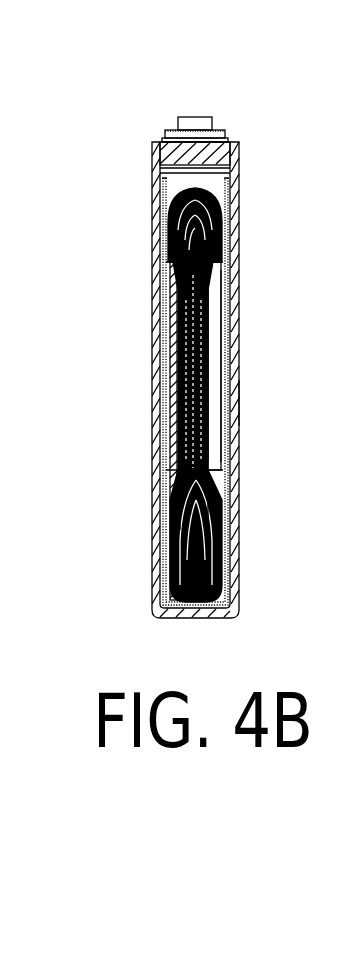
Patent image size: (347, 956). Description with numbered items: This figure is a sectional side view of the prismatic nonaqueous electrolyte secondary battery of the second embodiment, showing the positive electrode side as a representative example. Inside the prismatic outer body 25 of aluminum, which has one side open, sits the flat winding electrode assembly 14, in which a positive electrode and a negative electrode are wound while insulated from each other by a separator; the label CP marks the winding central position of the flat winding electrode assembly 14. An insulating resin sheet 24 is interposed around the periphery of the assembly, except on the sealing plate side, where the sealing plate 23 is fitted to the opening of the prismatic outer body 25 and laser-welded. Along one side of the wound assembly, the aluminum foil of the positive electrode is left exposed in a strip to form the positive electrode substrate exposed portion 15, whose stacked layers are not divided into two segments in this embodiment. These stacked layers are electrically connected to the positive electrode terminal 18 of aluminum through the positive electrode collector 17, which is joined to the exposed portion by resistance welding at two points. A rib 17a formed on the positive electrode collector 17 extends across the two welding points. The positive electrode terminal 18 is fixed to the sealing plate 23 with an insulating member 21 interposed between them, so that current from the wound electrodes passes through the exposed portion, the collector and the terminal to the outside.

The flat winding electrode assembly 14 is at (180, 492).
The positive electrode substrate exposed portion 15 is at (167, 300).
The positive electrode collector 17 is at (217, 258).
The rib 17a is at (218, 337).
The positive electrode terminal 18 is at (180, 117).
The insulating member 21 is at (225, 143).
The sealing plate 23 is at (231, 151).
The insulating resin sheet 24 is at (222, 585).
The prismatic outer body 25 is at (152, 546).
The winding central position CP is at (258, 412).